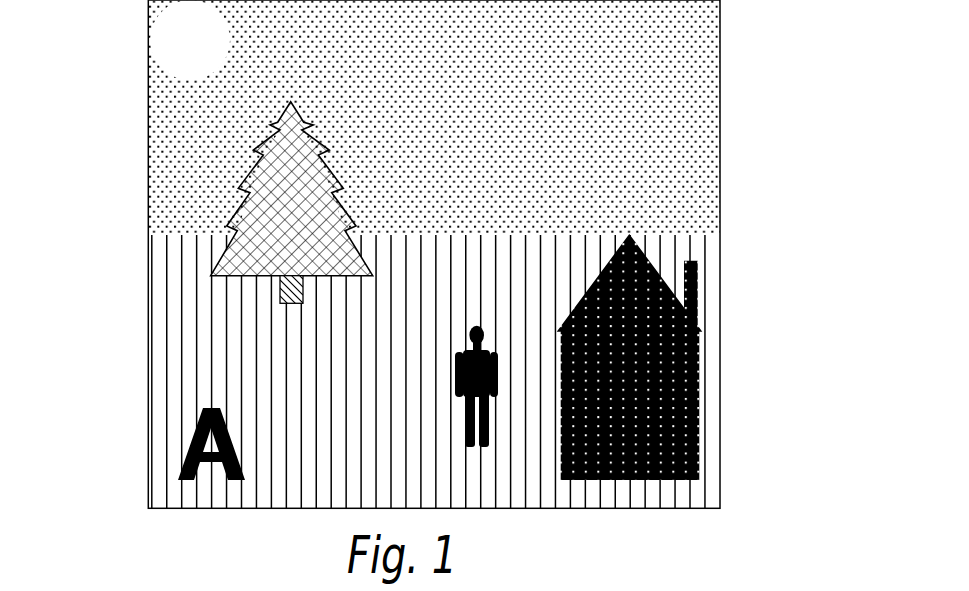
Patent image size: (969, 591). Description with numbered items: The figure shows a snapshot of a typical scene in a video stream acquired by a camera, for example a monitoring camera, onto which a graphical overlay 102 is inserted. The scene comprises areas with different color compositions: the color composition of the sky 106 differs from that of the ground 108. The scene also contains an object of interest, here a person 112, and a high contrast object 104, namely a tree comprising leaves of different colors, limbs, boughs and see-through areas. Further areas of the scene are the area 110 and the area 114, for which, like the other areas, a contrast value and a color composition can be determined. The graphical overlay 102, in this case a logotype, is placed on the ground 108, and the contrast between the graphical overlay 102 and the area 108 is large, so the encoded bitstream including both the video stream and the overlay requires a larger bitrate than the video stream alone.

The graphical overlay 102 is at (180, 467).
The high contrast object 104 is at (247, 207).
The sky 106 is at (665, 118).
The ground 108 is at (360, 476).
The area 110 is at (556, 410).
The person 112 is at (458, 372).
The area 114 is at (150, 35).